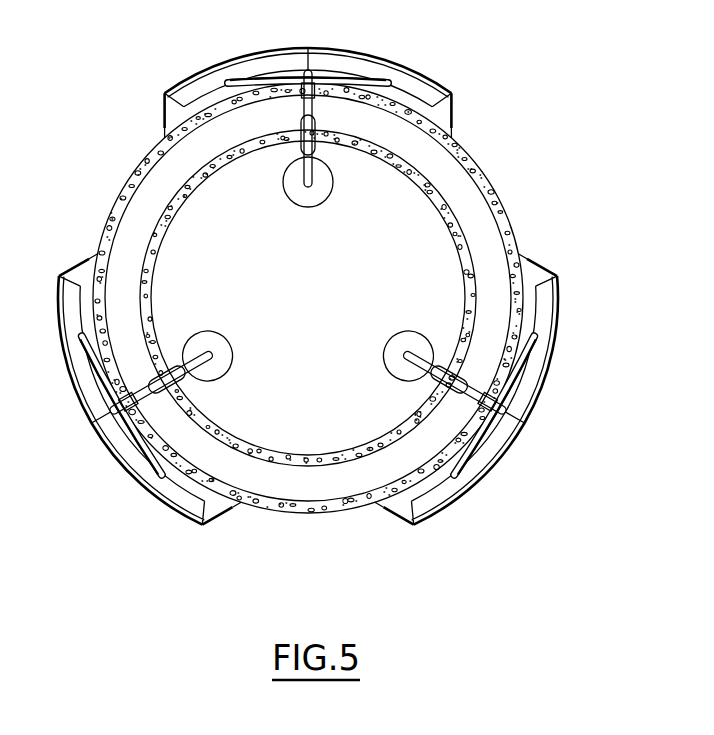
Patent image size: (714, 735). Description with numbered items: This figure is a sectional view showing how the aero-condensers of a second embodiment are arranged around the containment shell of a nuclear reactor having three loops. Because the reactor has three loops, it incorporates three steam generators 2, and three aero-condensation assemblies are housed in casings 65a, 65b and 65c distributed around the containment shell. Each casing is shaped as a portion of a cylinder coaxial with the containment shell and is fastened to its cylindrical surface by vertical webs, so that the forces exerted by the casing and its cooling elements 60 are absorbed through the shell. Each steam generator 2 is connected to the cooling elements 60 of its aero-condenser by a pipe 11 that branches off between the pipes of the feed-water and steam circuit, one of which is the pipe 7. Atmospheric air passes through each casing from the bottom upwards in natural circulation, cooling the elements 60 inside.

The steam generator 2 is at (331, 192).
The pipe of the feed-water and steam circuit 7 is at (309, 173).
The pipe 11 is at (316, 120).
The cooling element 60 is at (209, 88).
The casing 65a is at (551, 356).
The casing 65b is at (415, 72).
The casing 65c is at (145, 492).